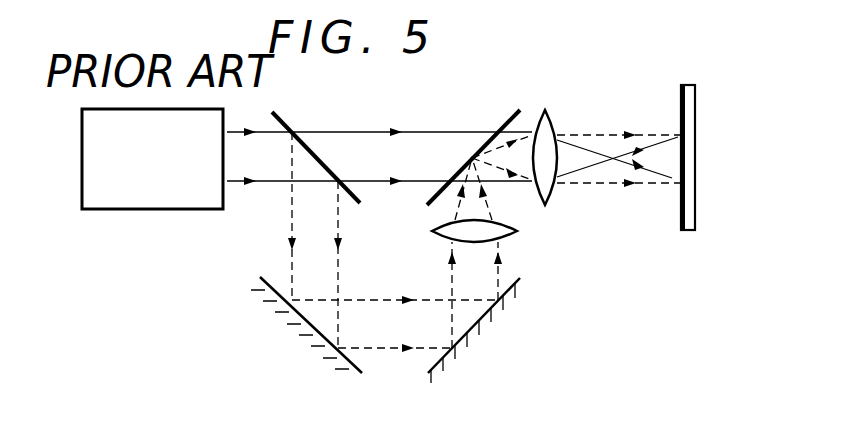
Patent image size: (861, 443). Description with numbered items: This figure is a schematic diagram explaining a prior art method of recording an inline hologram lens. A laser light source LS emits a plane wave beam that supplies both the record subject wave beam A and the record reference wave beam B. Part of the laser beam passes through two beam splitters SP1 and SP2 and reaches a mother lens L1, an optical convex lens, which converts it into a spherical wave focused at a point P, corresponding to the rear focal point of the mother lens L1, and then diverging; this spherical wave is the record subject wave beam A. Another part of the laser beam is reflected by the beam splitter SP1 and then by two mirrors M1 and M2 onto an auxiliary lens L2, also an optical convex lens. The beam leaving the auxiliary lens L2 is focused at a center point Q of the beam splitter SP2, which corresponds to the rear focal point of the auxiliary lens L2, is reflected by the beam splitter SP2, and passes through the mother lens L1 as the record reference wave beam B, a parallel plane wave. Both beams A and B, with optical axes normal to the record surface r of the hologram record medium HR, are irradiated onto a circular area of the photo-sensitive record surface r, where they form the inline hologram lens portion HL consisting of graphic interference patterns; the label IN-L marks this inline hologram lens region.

The laser light source LS is at (150, 210).
The first beam splitter SP1 is at (291, 131).
The second beam splitter SP2 is at (496, 127).
The center point of beam splitter SP2 Q is at (469, 149).
The mother lens L1 is at (551, 131).
The auxiliary lens L2 is at (432, 230).
The first mirror M1 is at (273, 284).
The second mirror M2 is at (512, 283).
The focal point P is at (613, 150).
The record reference wave beam B is at (661, 133).
The record surface r is at (669, 96).
The hologram record medium HR is at (690, 85).
The inline hologram lens portion HL is at (680, 167).
The record subject wave beam A is at (624, 170).
The interference light IN-L is at (680, 242).